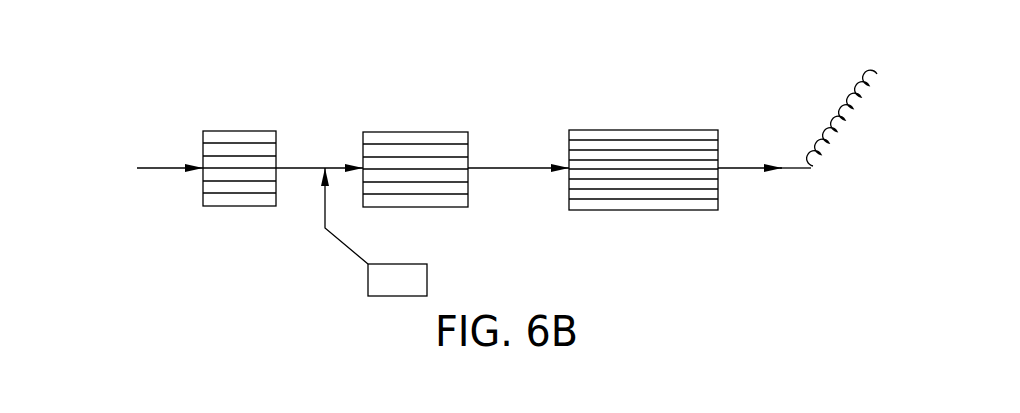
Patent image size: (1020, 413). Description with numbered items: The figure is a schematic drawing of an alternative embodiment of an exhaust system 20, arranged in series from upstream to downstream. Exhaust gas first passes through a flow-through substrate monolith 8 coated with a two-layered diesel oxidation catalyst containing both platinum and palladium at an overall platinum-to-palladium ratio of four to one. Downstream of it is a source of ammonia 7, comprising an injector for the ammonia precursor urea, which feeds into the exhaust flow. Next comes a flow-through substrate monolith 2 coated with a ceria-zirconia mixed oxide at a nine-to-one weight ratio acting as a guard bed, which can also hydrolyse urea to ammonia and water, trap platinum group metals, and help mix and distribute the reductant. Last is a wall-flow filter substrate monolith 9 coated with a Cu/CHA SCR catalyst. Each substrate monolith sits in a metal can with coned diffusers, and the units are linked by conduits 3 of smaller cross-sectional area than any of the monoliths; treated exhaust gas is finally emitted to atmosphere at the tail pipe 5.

The flow-through substrate monolith 2 is at (433, 208).
The conduits 3 is at (153, 168).
The tail pipe 5 is at (814, 182).
The source of ammonia 7 is at (345, 254).
The flow-through substrate monolith 8 is at (246, 208).
The wall-flow filter substrate monolith 9 is at (655, 213).
The exhaust system 20 is at (542, 148).